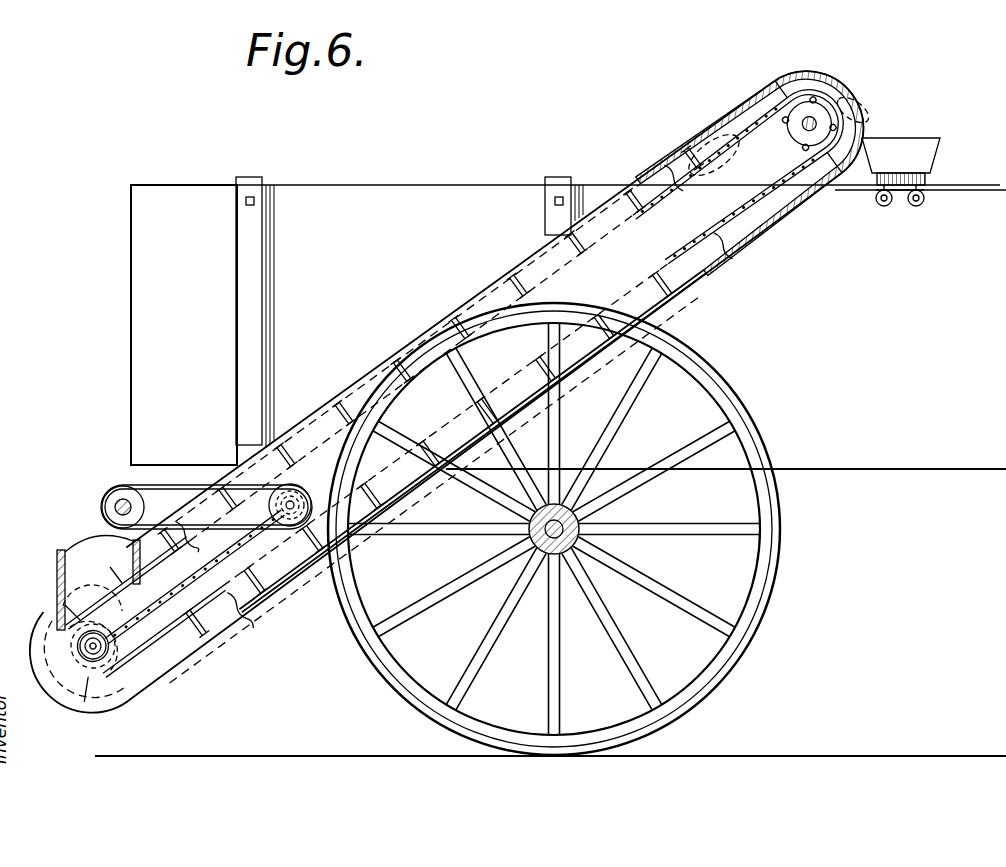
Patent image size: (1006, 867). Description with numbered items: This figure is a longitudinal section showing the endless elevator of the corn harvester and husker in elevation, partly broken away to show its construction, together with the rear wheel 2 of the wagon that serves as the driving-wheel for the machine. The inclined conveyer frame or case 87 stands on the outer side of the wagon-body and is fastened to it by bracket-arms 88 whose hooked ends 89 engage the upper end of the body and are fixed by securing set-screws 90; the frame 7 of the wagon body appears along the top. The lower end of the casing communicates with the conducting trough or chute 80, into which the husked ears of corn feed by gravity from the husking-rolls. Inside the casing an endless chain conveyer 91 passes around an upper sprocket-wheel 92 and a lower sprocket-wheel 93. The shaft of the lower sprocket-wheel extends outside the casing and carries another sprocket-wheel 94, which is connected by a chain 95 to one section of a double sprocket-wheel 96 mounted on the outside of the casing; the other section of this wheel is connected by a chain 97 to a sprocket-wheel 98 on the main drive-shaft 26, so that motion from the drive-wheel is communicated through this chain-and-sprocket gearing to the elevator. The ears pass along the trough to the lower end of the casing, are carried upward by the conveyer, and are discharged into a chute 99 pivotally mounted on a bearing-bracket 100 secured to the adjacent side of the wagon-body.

The rear wheel 2 is at (704, 362).
The frame 7 is at (391, 178).
The main drive-shaft 26 is at (120, 500).
The conducting trough or chute 80 is at (62, 554).
The inclined conveyer frame or case 87 is at (460, 397).
The bracket-arms 88 is at (248, 261).
The hooked ends 89 is at (258, 168).
The securing set-screws 90 is at (246, 203).
The endless chain conveyer 91 is at (782, 176).
The sprocket-wheel 92 is at (803, 110).
The sprocket-wheel 93 is at (74, 694).
The sprocket-wheel 94 is at (106, 652).
The chain 95 is at (238, 575).
The double sprocket-wheel 96 is at (293, 528).
The chain 97 is at (184, 480).
The sprocket-wheel 98 is at (112, 508).
The chute 99 is at (916, 132).
The bearing-bracket 100 is at (926, 190).